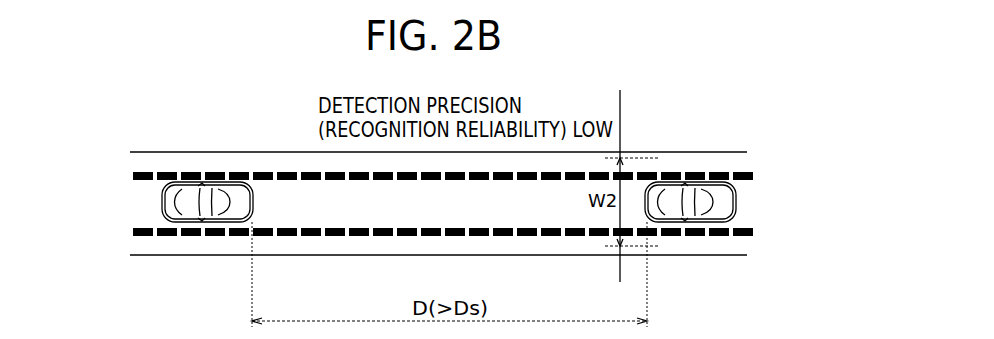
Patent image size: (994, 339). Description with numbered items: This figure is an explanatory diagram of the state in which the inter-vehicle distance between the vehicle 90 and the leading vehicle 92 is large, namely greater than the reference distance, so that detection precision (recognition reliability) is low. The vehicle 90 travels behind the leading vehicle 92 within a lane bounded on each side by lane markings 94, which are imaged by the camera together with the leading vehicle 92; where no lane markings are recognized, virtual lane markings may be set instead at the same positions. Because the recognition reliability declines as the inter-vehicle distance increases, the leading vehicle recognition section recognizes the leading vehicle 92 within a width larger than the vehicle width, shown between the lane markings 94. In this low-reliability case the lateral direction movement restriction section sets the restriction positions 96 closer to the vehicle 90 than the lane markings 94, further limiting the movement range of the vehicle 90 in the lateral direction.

The vehicle 90 is at (162, 200).
The leading vehicle 92 is at (737, 200).
The lane markings 94 is at (170, 151).
The restriction positions 96 is at (133, 175).